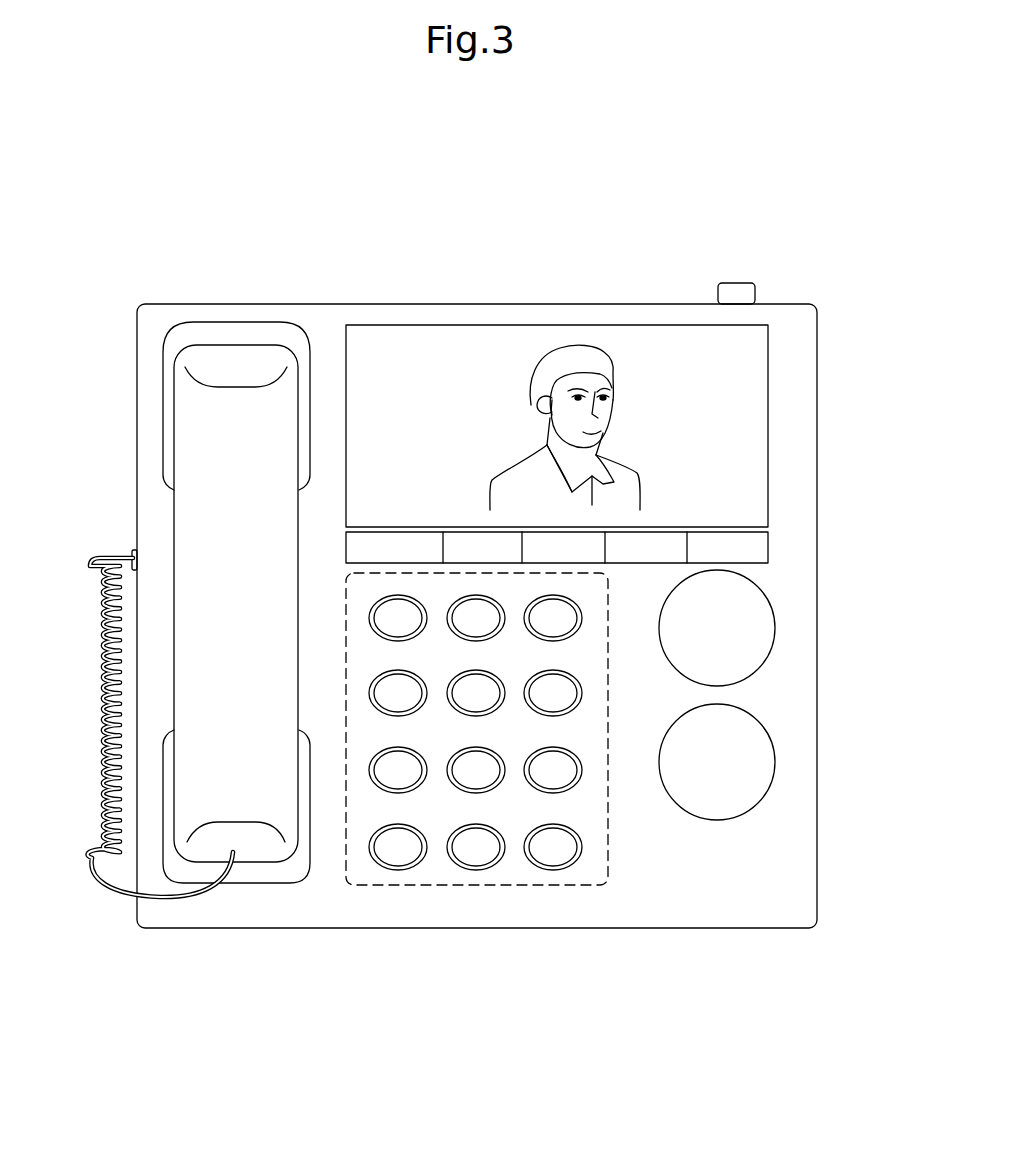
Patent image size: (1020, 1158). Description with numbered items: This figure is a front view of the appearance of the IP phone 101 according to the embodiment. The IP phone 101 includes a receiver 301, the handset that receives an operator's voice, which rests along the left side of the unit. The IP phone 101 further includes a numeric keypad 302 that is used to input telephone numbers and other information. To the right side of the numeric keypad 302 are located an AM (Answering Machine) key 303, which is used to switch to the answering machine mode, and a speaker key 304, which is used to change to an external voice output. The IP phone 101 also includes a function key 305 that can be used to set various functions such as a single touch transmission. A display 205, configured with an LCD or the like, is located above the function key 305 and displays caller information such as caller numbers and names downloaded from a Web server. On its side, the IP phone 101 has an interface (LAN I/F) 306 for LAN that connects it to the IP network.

The IP phone 101 is at (197, 276).
The receiver 301 is at (185, 505).
The display 205 is at (755, 432).
The function key 305 is at (755, 548).
The numeric keypad 302 is at (609, 858).
The AM (Answering Machine) key 303 is at (762, 655).
The speaker key 304 is at (760, 745).
The interface (LAN I/F) for LAN 306 is at (738, 283).